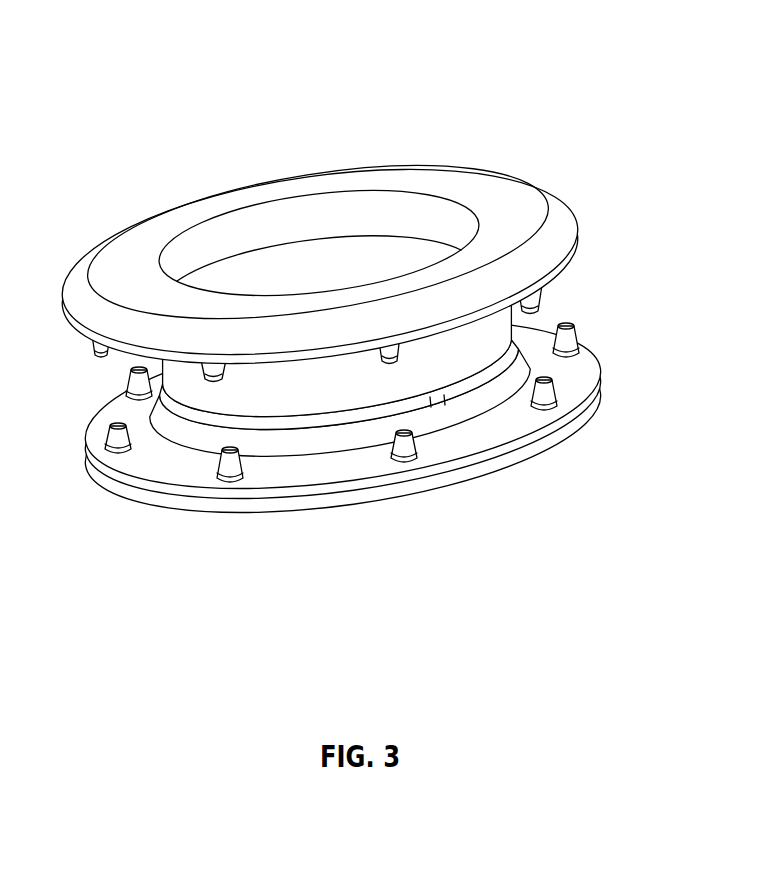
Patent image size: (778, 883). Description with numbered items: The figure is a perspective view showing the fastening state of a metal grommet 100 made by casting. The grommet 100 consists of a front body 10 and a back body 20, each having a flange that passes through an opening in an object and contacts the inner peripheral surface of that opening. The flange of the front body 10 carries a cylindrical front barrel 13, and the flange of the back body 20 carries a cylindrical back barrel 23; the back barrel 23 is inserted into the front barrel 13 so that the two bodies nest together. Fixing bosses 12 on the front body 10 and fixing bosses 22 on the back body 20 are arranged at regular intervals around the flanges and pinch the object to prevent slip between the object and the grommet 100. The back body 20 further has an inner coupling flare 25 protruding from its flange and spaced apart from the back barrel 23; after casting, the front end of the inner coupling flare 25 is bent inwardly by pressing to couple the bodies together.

The metal grommet 100 is at (370, 115).
The front body 10 is at (522, 210).
The fixing bosses 12 is at (546, 302).
The front barrel 13 is at (252, 390).
The back body 20 is at (330, 470).
The fixing bosses 22 is at (565, 388).
The back barrel 23 is at (252, 277).
The inner coupling flare 25 is at (440, 400).